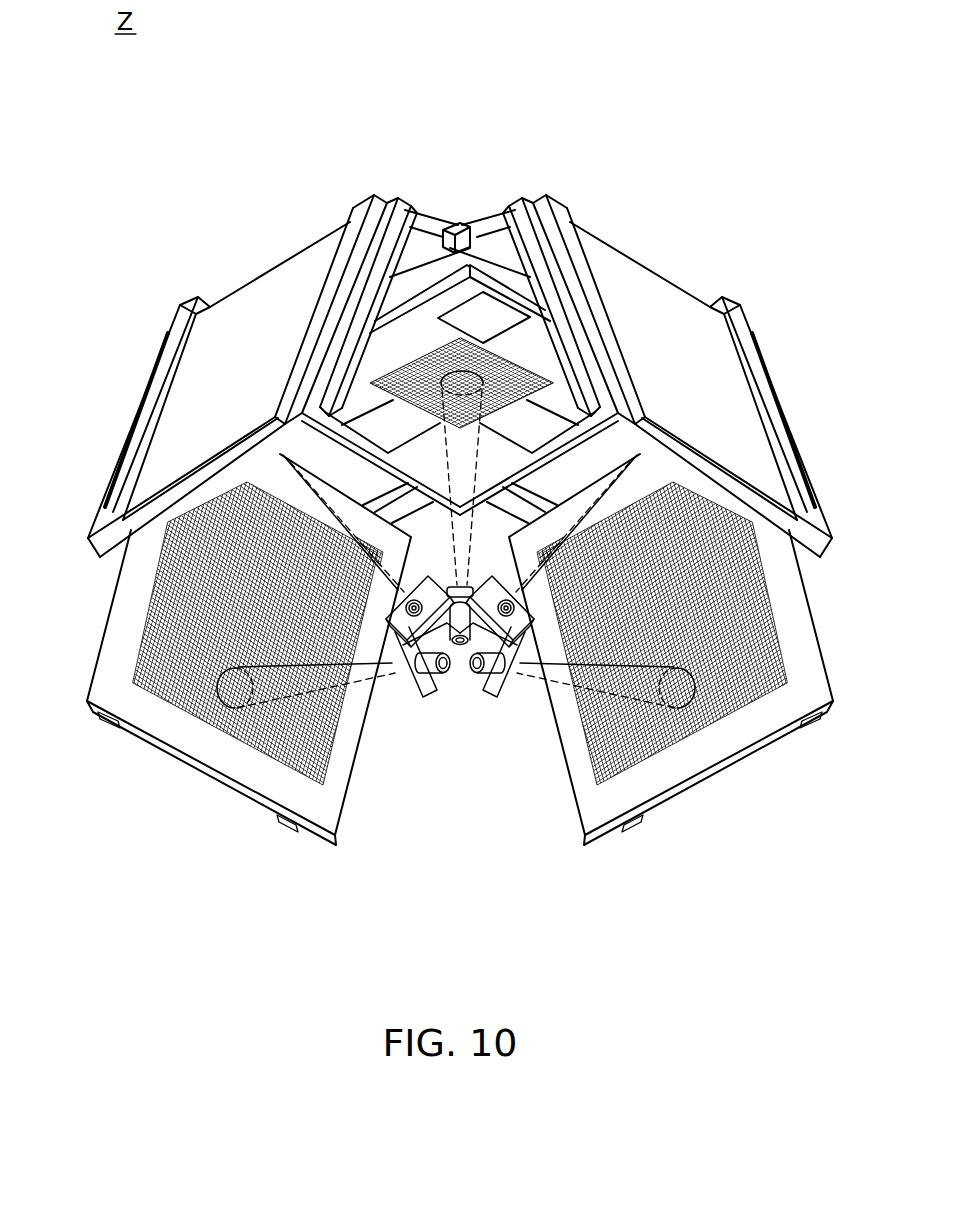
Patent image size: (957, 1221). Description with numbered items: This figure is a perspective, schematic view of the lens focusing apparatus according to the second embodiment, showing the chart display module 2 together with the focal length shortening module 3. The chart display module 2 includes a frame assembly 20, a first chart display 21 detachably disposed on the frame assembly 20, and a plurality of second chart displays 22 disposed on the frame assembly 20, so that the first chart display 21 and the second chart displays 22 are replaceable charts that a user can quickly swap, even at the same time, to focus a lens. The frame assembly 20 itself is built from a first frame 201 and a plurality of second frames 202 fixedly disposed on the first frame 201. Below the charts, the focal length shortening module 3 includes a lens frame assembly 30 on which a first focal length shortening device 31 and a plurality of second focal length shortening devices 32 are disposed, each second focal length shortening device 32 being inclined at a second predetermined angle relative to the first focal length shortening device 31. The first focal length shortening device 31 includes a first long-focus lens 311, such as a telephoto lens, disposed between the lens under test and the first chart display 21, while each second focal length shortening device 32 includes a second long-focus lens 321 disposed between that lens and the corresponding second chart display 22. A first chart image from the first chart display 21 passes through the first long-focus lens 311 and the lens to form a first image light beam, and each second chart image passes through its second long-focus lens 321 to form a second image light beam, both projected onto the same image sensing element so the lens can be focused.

The chart display module 2 is at (131, 383).
The frame assembly 20 is at (569, 297).
The first frame 201 is at (450, 257).
The second frame 202 is at (358, 216).
The first chart display 21 is at (465, 290).
The second chart display 22 is at (253, 305).
The focal length shortening module 3 is at (458, 609).
The lens frame assembly 30 is at (500, 668).
The first focal length shortening device 31 is at (460, 644).
The second focal length shortening device 32 is at (442, 675).
The first long-focus lens 311 is at (383, 675).
The second long-focus lens 321 is at (505, 688).